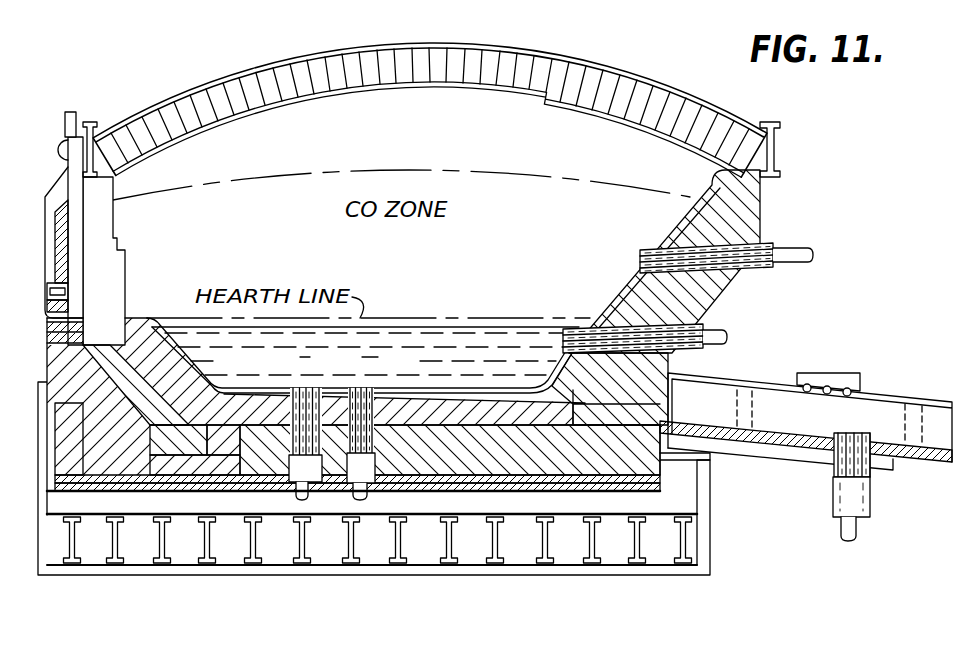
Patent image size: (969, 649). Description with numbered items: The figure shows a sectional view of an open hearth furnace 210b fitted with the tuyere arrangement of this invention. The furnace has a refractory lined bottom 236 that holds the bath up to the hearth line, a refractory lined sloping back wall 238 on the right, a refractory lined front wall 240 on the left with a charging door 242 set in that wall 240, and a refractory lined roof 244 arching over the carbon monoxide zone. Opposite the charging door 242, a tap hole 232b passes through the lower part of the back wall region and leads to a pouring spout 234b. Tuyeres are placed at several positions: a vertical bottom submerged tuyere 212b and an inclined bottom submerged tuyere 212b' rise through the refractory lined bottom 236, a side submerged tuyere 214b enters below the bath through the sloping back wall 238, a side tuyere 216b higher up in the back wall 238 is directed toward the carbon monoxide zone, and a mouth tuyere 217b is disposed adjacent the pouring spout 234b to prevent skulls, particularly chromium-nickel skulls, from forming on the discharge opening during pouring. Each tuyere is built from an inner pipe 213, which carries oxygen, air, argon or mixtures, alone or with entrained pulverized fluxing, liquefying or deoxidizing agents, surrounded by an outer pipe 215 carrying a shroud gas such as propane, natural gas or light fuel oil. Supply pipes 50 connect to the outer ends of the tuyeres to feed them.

The refractory lined roof 244 is at (508, 64).
The open hearth furnace 210b is at (606, 62).
The refractory lined front wall 240 is at (103, 200).
The charging door 242 is at (67, 233).
The refractory lined sloping back wall 238 is at (703, 218).
The outer pipe 215 is at (655, 247).
The inner pipe 213 is at (643, 262).
The side tuyere 216b is at (760, 243).
The side submerged tuyere 214b is at (705, 354).
The burner supply pipe 50 is at (797, 250).
The pouring spout 234b is at (880, 390).
The mouth tuyere 217b is at (873, 488).
The tap hole 232b is at (577, 393).
The refractory lined bottom 236 is at (230, 398).
The vertical bottom submerged tuyere 212b is at (268, 502).
The inclined bottom submerged tuyere 212b' is at (397, 501).